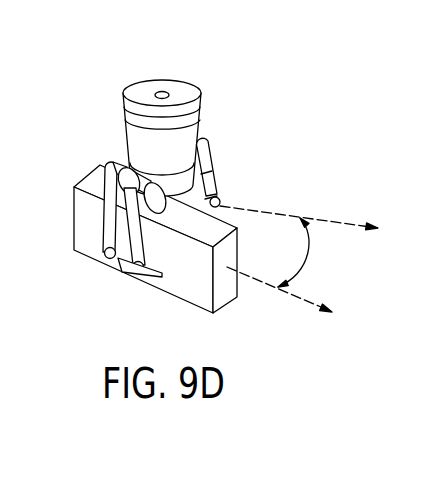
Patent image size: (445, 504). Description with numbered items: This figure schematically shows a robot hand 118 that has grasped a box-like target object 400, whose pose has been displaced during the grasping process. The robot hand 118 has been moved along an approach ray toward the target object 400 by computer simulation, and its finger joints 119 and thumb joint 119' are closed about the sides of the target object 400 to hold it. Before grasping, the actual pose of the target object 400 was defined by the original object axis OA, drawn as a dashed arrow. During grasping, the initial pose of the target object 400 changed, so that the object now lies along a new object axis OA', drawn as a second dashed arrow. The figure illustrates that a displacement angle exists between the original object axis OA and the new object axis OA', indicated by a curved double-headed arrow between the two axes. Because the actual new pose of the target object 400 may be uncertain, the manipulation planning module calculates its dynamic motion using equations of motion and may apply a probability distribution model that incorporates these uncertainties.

The robot hand 118 is at (124, 127).
The finger joints 119 is at (103, 232).
The thumb joint 119' is at (227, 172).
The object axis OA is at (299, 199).
The new object axis OA' is at (299, 288).
The target object 400 is at (217, 254).